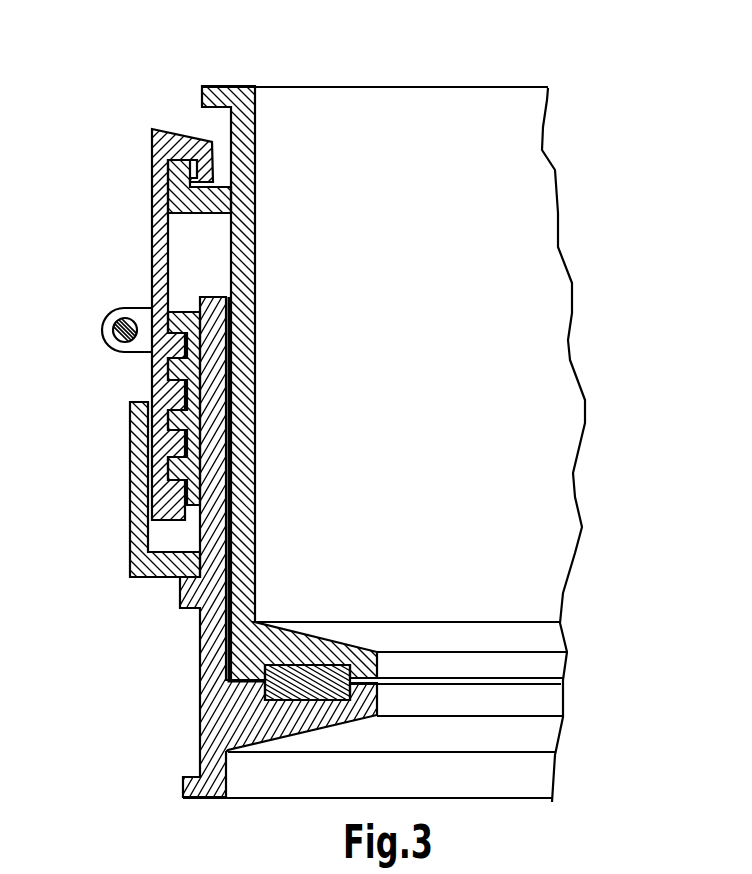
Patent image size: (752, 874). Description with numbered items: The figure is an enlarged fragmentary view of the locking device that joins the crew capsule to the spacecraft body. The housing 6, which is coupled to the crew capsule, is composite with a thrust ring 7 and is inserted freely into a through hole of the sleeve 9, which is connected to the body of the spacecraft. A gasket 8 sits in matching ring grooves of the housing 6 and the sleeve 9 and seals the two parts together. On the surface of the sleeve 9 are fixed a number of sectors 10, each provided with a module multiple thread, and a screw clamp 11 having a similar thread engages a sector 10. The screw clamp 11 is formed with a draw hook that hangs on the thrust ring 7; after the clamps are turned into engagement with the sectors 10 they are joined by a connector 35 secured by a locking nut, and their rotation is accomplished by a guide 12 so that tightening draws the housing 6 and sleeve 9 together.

The housing 6 is at (250, 88).
The thrust ring 7 is at (177, 173).
The gasket 8 is at (310, 665).
The sleeve 9 is at (210, 627).
The sector 10 is at (180, 310).
The screw clamp 11 is at (163, 128).
The guide 12 is at (133, 457).
The connector 35 is at (108, 337).